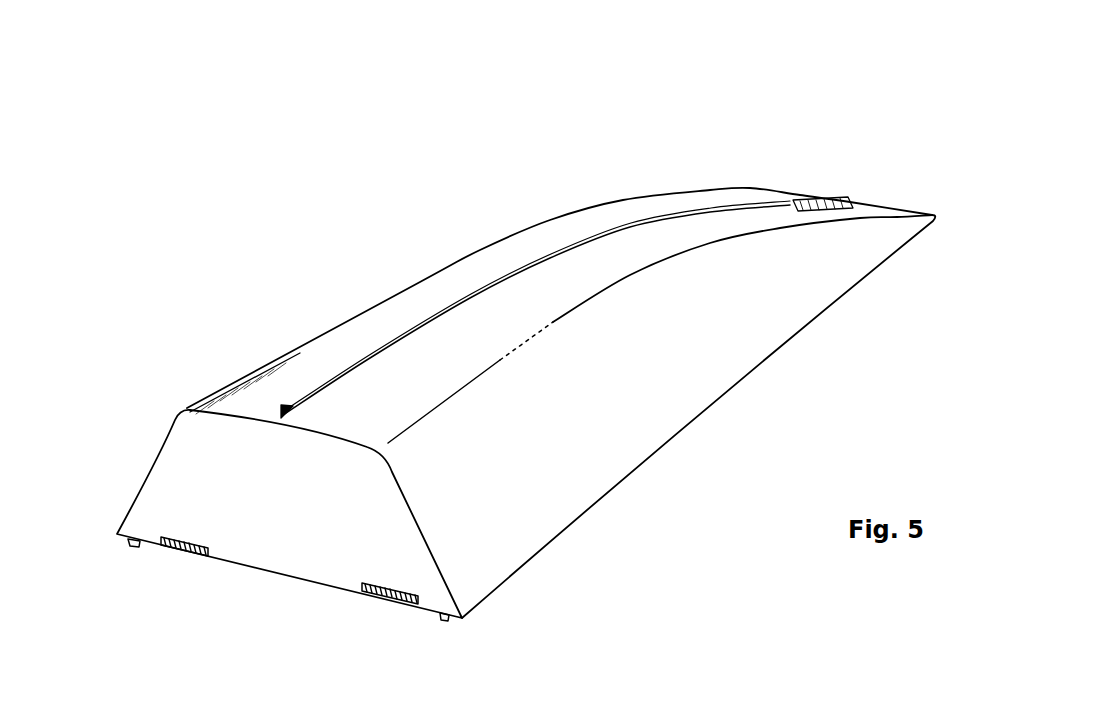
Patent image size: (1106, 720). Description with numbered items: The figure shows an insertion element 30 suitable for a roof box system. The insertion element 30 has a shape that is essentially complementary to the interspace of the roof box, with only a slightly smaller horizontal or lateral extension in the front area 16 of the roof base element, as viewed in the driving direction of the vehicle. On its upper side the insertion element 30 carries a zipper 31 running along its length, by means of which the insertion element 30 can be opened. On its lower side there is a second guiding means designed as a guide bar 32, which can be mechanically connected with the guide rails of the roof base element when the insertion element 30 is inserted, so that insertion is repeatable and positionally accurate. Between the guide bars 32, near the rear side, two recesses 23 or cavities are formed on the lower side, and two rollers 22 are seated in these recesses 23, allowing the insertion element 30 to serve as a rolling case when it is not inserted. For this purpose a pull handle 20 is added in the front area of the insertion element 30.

The front area 16 is at (915, 151).
The pull handle 20 is at (823, 193).
The rollers 22 is at (173, 555).
The recesses 23 is at (180, 537).
The insertion element 30 is at (365, 312).
The zipper 31 is at (453, 305).
The guide bar 32 is at (135, 547).